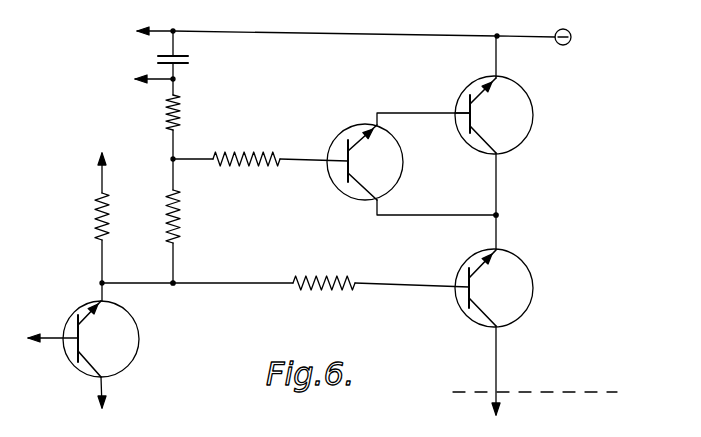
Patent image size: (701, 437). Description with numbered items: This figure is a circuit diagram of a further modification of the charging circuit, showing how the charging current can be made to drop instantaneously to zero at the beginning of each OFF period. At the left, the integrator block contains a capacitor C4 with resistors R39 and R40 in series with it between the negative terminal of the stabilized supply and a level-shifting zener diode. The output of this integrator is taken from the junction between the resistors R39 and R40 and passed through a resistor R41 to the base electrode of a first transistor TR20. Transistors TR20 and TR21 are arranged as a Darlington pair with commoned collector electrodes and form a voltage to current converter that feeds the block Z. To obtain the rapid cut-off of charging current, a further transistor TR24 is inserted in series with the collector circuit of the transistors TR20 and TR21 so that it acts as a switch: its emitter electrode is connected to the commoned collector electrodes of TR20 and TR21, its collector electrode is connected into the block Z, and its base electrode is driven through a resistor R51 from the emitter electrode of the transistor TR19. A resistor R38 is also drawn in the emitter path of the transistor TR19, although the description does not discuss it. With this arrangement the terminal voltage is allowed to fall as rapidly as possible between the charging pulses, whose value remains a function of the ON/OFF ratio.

The capacitor C4 is at (193, 63).
The resistor R38 is at (92, 224).
The resistor R39 is at (183, 114).
The resistor R40 is at (182, 220).
The resistor R41 is at (262, 153).
The resistor R51 is at (323, 292).
The transistor TR19 is at (128, 351).
The first transistor TR20 is at (390, 180).
The second transistor TR21 is at (524, 125).
The further transistor TR24 is at (524, 298).
The block Z is at (538, 391).